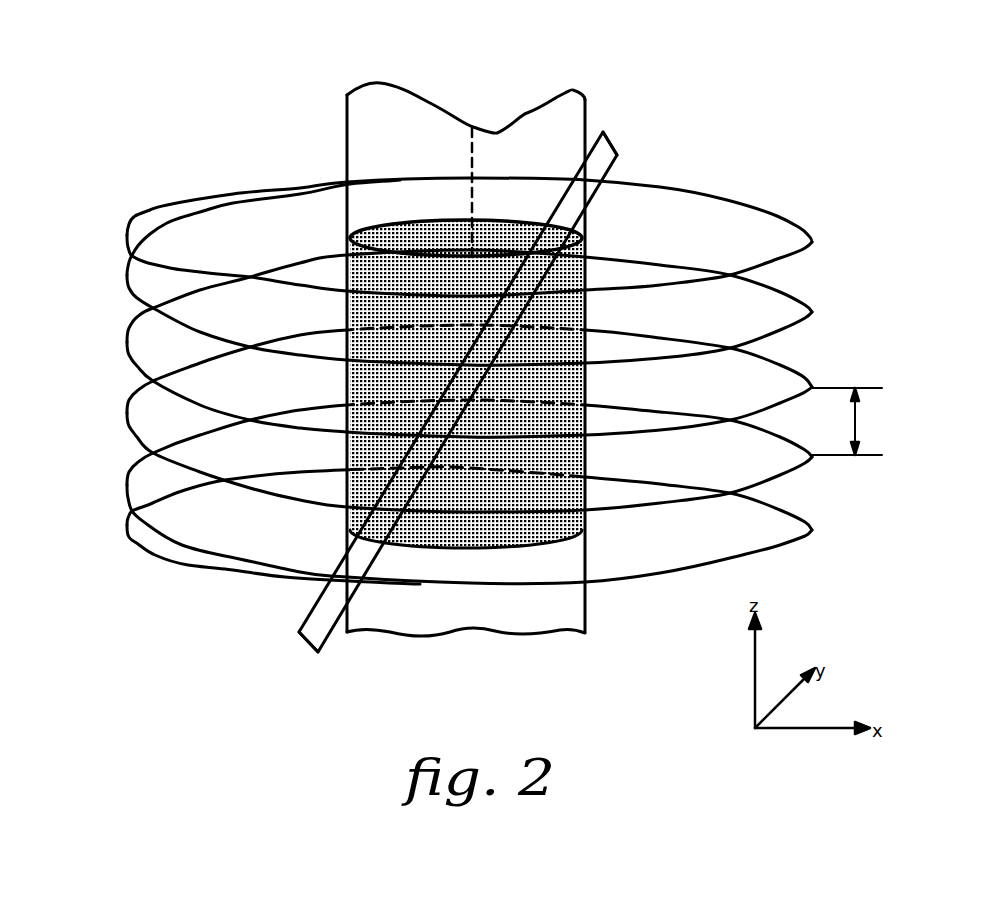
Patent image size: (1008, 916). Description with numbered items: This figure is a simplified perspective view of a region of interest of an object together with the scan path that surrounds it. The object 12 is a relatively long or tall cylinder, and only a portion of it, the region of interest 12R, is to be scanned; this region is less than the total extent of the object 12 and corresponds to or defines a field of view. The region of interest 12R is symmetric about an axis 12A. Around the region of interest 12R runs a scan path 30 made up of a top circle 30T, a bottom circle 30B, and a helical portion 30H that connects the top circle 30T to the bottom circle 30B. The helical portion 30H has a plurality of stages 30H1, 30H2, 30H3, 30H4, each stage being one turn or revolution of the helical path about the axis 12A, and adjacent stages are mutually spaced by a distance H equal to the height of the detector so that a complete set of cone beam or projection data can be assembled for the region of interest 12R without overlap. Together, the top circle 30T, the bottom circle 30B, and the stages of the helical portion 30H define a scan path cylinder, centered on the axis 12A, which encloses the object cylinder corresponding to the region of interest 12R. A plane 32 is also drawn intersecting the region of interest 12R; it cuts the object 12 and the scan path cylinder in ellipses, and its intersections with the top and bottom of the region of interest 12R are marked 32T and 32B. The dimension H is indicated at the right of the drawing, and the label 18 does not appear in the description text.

The object 12 is at (570, 125).
The axis 12A is at (473, 152).
The region of interest 12R is at (347, 256).
The scan path 30 is at (128, 360).
The top circle 30T is at (130, 237).
The bottom circle 30B is at (665, 580).
The helical portion 30H is at (128, 417).
The first stage 30H1 is at (126, 266).
The second stage 30H2 is at (127, 338).
The third stage 30H3 is at (128, 436).
The fourth stage 30H4 is at (128, 503).
The plane 32 is at (604, 133).
The intersection with top of region of interest 32T is at (583, 227).
The intersection with bottom of region of interest 32B is at (340, 546).
The coil pitch 18 is at (803, 378).